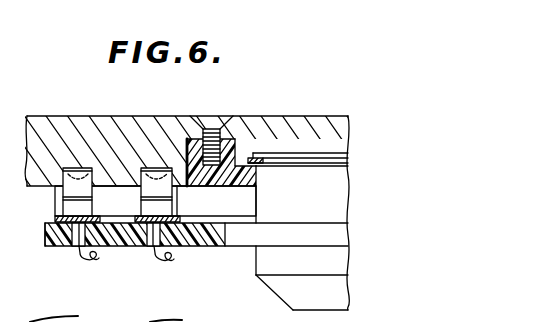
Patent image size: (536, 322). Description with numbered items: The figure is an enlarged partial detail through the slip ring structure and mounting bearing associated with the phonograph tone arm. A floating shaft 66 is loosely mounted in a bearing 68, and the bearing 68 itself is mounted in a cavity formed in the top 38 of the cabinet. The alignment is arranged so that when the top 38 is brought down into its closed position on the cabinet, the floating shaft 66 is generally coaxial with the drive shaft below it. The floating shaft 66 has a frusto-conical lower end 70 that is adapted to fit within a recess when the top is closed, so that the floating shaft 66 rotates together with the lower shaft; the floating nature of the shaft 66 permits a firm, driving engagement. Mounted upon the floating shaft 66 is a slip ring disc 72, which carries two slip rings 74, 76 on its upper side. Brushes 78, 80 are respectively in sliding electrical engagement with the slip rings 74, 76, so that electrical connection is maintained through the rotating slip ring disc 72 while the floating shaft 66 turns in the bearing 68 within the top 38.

The top 38 is at (122, 86).
The floating shaft 66 is at (307, 179).
The bearing 68 is at (231, 143).
The frusto-conical lower end 70 is at (294, 288).
The slip ring disc 72 is at (202, 244).
The slip ring 74 is at (60, 223).
The slip ring 76 is at (148, 215).
The brush 78 is at (67, 192).
The brush 80 is at (178, 203).